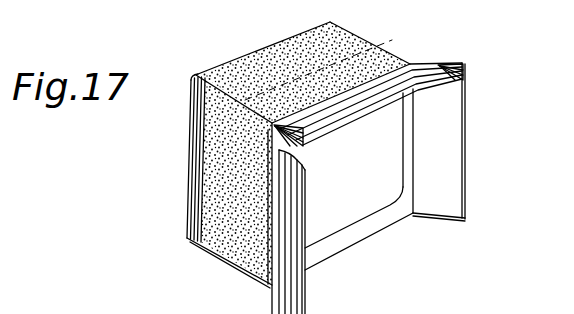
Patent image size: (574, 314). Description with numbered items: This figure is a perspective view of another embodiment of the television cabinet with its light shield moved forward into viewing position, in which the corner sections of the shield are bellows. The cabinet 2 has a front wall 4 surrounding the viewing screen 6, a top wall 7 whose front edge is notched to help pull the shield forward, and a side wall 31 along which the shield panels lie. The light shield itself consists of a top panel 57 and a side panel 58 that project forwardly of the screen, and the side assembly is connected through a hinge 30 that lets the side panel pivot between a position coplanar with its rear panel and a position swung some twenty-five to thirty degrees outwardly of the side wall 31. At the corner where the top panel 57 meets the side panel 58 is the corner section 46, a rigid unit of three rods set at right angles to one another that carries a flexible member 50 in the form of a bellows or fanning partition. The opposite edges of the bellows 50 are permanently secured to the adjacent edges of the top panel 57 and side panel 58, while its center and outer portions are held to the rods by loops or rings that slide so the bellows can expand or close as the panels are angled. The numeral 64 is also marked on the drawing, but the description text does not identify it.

The cabinet 2 is at (294, 166).
The front wall 4 is at (357, 232).
The viewing screen 6 is at (360, 190).
The top wall 7 is at (352, 48).
The hinge 30 is at (243, 269).
The side wall 31 is at (196, 177).
The corner section 46 is at (284, 126).
The flexible member 50 is at (305, 144).
The top panel 57 is at (350, 102).
The side panel 58 is at (442, 147).
The bottom edge binding strip 64 is at (84, 308).